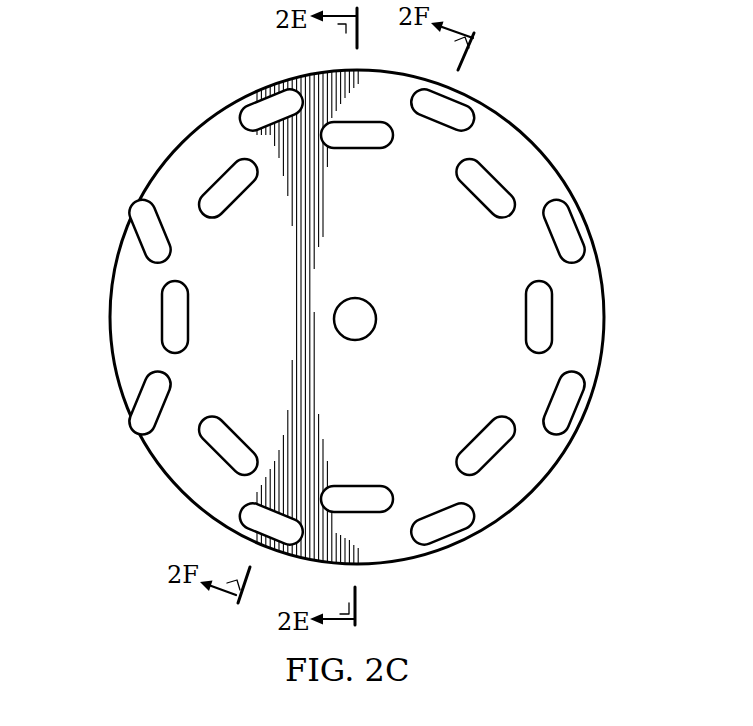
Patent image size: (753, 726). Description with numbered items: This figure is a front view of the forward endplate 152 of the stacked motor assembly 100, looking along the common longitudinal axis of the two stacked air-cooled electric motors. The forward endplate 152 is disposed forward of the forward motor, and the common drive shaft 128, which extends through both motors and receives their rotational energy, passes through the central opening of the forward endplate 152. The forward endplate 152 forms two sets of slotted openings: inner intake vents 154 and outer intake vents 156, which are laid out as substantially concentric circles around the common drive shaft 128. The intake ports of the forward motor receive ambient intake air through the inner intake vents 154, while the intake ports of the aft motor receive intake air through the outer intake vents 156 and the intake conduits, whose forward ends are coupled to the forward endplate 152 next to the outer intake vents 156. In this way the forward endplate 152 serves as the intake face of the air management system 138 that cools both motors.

The stacked motor assembly 100 is at (510, 74).
The air management system 138 is at (98, 339).
The forward endplate 152 is at (117, 297).
The inner intake vents 154 is at (472, 446).
The outer intake vents 156 is at (572, 418).
The common drive shaft 128 is at (355, 297).